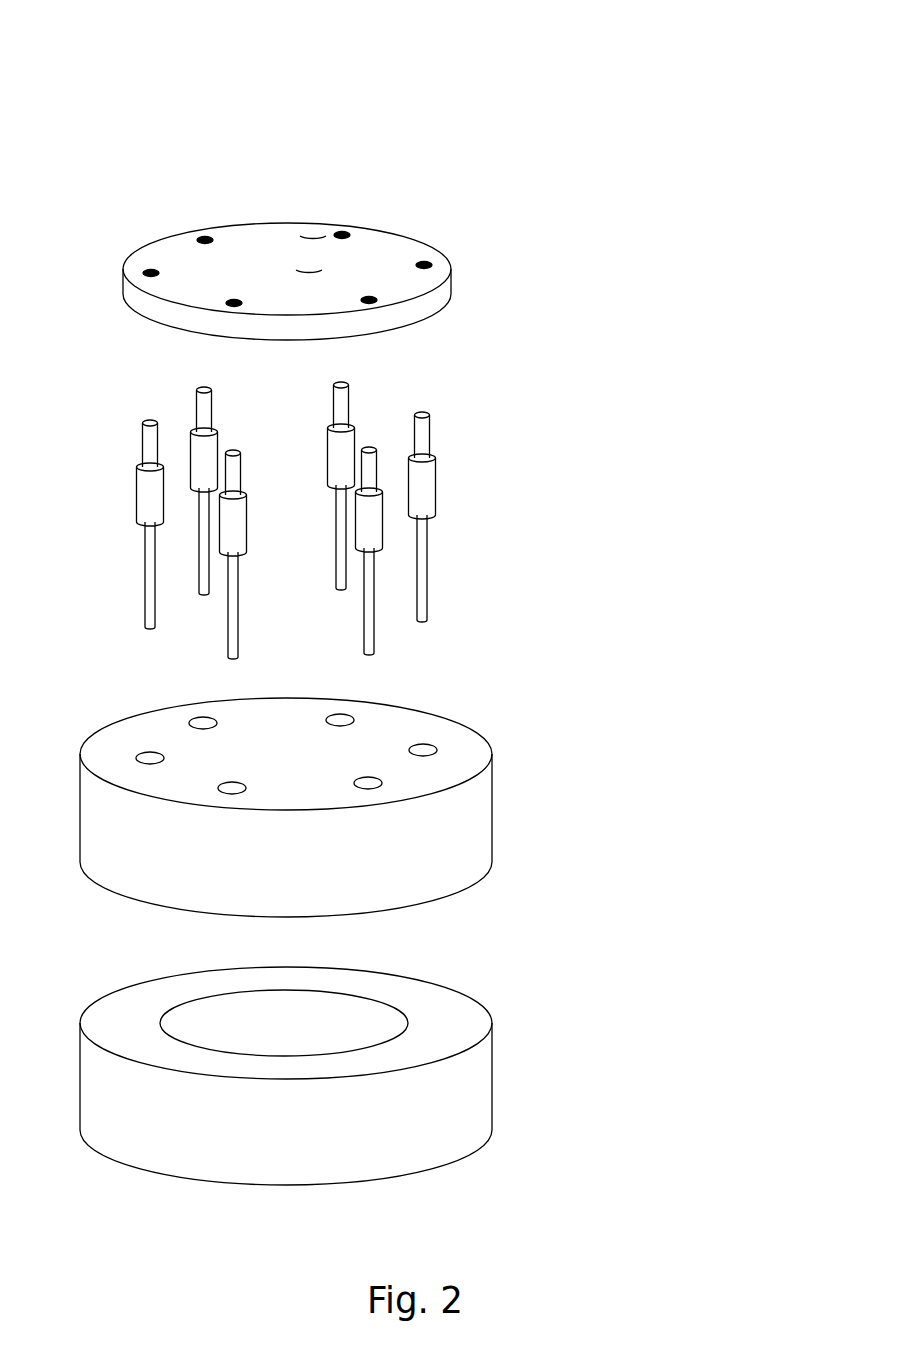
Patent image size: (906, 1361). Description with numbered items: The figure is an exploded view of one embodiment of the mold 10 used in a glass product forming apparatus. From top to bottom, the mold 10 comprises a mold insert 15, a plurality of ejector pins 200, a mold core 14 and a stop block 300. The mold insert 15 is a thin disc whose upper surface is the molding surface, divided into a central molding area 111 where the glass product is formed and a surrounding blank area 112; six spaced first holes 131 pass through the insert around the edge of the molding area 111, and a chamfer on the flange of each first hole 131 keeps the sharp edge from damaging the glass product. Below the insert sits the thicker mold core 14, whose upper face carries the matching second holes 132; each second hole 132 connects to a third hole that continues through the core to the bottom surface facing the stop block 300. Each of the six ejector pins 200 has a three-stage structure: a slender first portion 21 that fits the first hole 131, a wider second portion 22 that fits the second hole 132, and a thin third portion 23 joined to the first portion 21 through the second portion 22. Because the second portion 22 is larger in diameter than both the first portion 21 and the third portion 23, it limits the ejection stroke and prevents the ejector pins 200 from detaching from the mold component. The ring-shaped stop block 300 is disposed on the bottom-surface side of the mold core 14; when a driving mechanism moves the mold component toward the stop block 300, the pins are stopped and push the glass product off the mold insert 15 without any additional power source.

The mold 10 is at (475, 54).
The mold insert 15 is at (383, 242).
The molding area 111 is at (310, 272).
The blank area 112 is at (313, 233).
The first hole 131 is at (424, 265).
The second hole 132 is at (430, 750).
The mold core 14 is at (362, 807).
The ejector pins 200 is at (442, 520).
The first portion 21 is at (422, 442).
The second portion 22 is at (422, 487).
The third portion 23 is at (422, 560).
The stop block 300 is at (468, 1103).